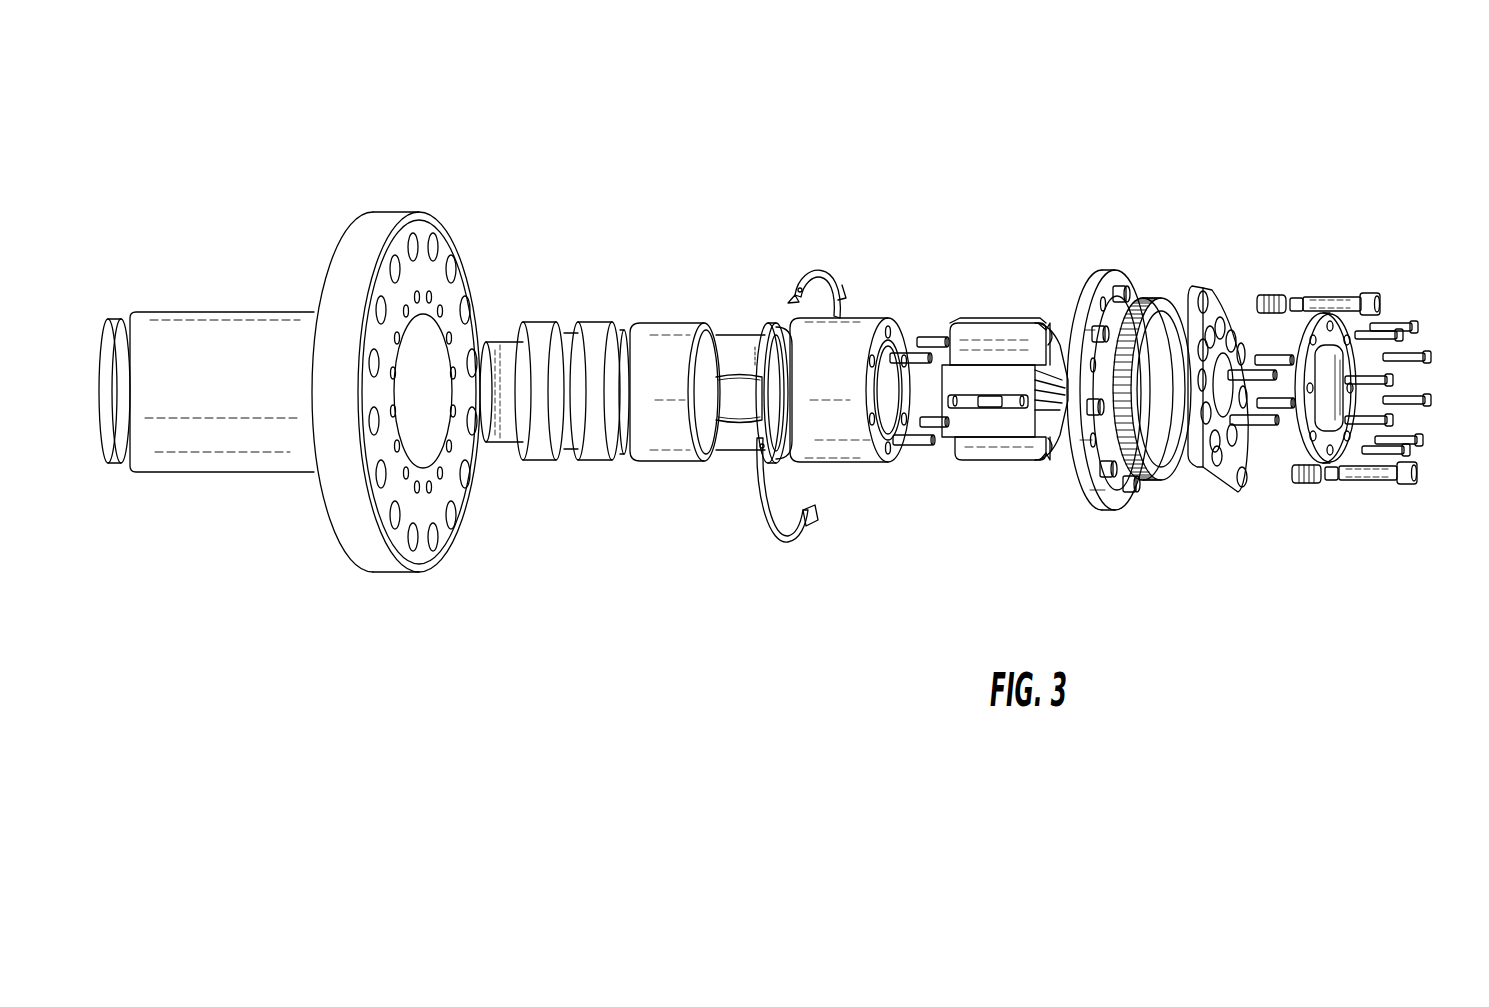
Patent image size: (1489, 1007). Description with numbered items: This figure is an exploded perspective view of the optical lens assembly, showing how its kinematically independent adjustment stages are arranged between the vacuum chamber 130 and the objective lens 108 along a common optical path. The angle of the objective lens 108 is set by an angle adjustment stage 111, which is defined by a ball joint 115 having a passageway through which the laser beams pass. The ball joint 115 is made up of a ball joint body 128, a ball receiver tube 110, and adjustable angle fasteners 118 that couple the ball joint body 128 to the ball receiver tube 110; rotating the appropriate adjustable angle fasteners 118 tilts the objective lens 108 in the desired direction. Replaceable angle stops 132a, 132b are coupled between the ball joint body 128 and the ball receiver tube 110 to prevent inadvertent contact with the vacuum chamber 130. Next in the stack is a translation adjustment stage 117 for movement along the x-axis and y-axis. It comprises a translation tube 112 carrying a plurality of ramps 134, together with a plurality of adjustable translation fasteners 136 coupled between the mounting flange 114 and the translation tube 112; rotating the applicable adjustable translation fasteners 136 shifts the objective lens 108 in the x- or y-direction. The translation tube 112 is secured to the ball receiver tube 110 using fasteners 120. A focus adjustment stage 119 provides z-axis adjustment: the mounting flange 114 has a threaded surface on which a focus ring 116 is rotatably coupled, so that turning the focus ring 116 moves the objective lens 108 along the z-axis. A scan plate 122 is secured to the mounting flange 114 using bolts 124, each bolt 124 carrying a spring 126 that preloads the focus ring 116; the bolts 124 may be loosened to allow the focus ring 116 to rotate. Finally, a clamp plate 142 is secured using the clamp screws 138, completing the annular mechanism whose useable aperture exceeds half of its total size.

The objective lens 108 is at (580, 325).
The ball receiver tube 110 is at (860, 320).
The angle adjustment stage 111 is at (746, 283).
The translation tube 112 is at (1012, 325).
The mounting flange 114 is at (1105, 275).
The ball joint 115 is at (890, 610).
The focus ring 116 is at (1154, 300).
The translation adjustment stage 117 is at (977, 528).
The adjustable angle fasteners 118 is at (932, 338).
The focus adjustment stage 119 is at (1127, 533).
The fasteners 120 is at (990, 408).
The scan plate 122 is at (1198, 290).
The bolts 124 is at (1370, 293).
The spring 126 is at (1272, 292).
The ball joint body 128 is at (730, 448).
The vacuum chamber 130 is at (237, 290).
The angle stop 132a is at (807, 262).
The angle stop 132b is at (777, 540).
The ramps 134 is at (1037, 445).
The adjustable translation fasteners 136 is at (1262, 355).
The clamp screws 138 is at (1432, 400).
The clamp plate 142 is at (1305, 450).